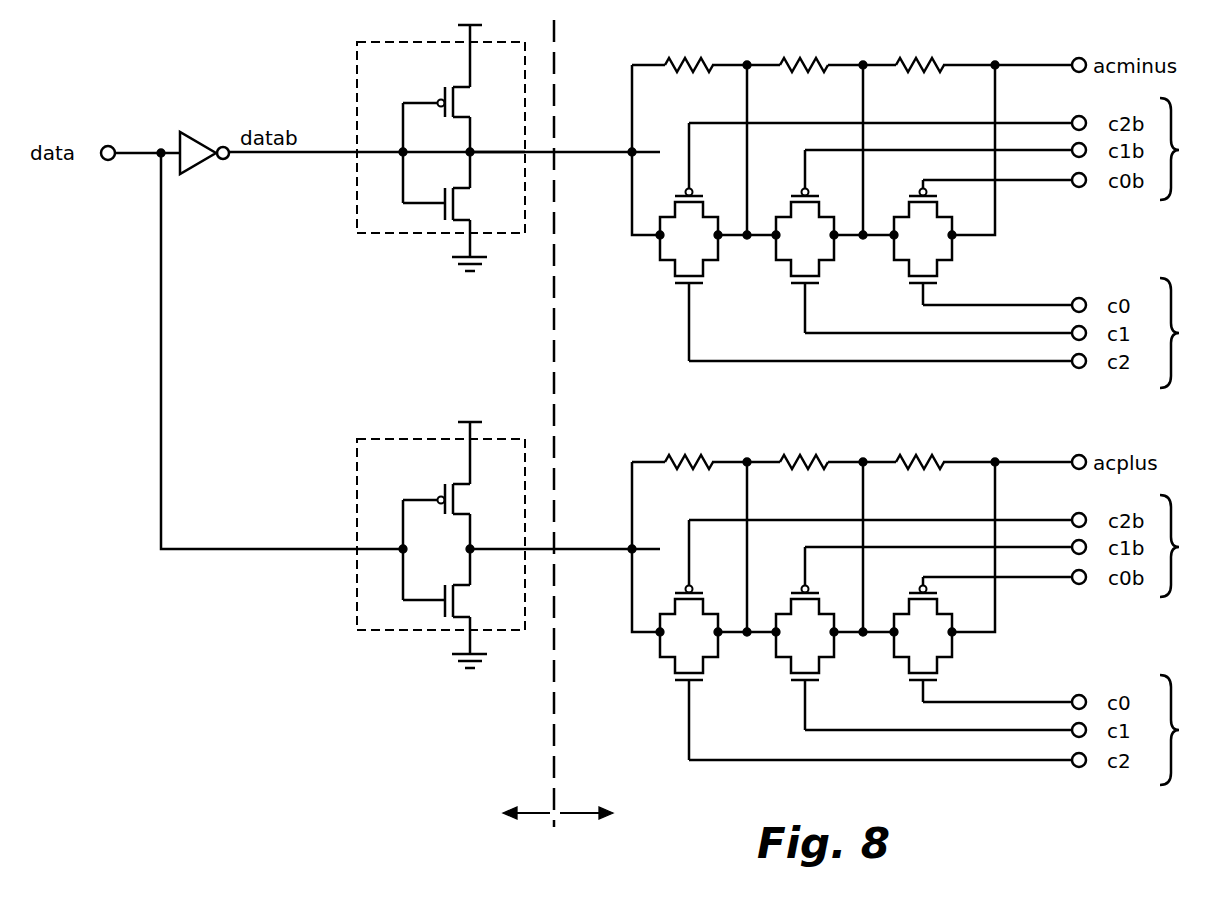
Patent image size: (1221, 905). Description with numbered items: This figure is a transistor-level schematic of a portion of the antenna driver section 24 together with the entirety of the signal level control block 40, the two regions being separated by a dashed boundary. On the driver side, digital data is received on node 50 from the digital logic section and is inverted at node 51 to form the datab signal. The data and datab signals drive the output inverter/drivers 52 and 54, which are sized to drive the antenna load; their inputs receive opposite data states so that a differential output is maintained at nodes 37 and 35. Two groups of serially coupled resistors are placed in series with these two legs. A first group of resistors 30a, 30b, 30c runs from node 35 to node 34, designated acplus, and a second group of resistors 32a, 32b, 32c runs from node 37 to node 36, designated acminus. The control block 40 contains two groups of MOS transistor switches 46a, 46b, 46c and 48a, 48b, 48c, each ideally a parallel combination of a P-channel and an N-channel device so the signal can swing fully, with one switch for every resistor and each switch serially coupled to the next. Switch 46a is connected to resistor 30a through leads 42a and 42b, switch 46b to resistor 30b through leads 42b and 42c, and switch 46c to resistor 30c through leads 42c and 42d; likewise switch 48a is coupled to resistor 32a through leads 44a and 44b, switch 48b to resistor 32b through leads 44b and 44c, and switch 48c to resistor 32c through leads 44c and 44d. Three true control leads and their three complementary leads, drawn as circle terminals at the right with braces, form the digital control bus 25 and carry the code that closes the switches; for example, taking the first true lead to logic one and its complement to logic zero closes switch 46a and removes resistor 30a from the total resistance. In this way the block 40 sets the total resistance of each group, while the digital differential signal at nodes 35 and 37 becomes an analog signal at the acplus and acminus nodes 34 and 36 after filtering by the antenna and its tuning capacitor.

The node 50 is at (112, 146).
The node 51 is at (331, 150).
The output inverter/driver 52 is at (357, 200).
The output inverter/driver 54 is at (357, 597).
The node 37 is at (597, 152).
The node 35 is at (597, 549).
The resistor 32a is at (941, 62).
The resistor 32b is at (805, 62).
The resistor 32c is at (685, 62).
The resistor 30a is at (941, 459).
The resistor 30b is at (805, 459).
The resistor 30c is at (685, 459).
The node 36 is at (1083, 58).
The node 34 is at (1083, 455).
The lead 44a is at (995, 215).
The lead 44b is at (863, 112).
The lead 44c is at (747, 110).
The lead 44d is at (632, 133).
The lead 42a is at (995, 612).
The lead 42b is at (863, 509).
The lead 42c is at (747, 507).
The lead 42d is at (632, 530).
The transistor switch 48a is at (905, 268).
The transistor switch 48b is at (789, 268).
The transistor switch 48c is at (673, 268).
The transistor switch 46a is at (905, 665).
The transistor switch 46b is at (789, 665).
The transistor switch 46c is at (673, 665).
The digital control bus 25 is at (1184, 441).
The driver section 24 is at (510, 813).
The signal level control block 40 is at (603, 813).